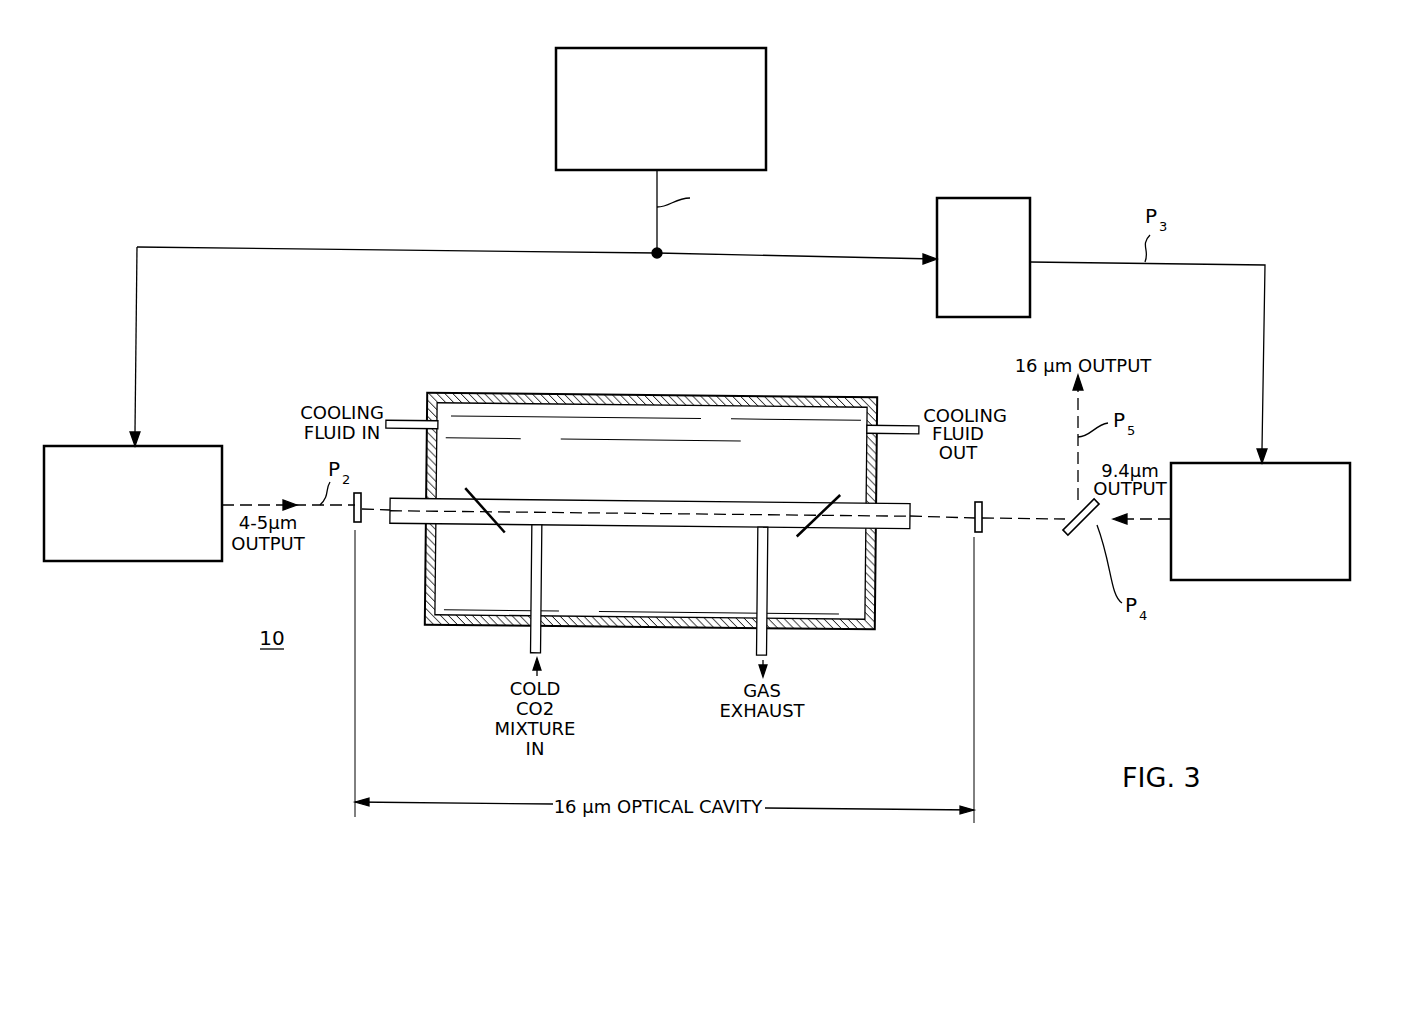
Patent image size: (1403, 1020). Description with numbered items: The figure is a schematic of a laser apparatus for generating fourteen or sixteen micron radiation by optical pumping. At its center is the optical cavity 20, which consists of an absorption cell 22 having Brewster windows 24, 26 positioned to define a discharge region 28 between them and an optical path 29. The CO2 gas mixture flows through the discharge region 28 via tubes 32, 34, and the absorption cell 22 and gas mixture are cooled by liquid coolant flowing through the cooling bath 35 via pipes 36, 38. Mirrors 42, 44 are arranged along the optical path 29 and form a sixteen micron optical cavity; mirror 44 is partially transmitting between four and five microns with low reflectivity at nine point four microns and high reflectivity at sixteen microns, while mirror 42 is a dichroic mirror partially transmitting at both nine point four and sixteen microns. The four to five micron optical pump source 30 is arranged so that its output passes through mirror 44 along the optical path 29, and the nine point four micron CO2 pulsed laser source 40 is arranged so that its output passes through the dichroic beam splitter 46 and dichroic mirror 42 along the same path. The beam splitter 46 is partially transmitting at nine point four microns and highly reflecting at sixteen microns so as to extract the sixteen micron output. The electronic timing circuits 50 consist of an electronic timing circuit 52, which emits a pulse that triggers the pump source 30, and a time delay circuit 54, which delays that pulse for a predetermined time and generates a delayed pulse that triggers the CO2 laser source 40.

The optical cavity 20 is at (651, 512).
The absorption cell 22 is at (687, 528).
The Brewster window 24 is at (486, 526).
The Brewster window 26 is at (822, 527).
The discharge region 28 is at (592, 520).
The optical path 29 is at (851, 520).
The optical pump source 30 is at (143, 563).
The tube 32 is at (543, 637).
The tube 34 is at (770, 645).
The cooling bath 35 is at (683, 430).
The pipe 36 is at (405, 420).
The pipe 38 is at (897, 423).
The CO2 pulsed laser source 40 is at (1272, 582).
The dichroic mirror 42 is at (985, 522).
The mirror 44 is at (362, 515).
The dichroic beam splitter 46 is at (1086, 540).
The electronic timing circuits 50 is at (643, 306).
The electronic timing circuit 52 is at (766, 105).
The time delay circuit 54 is at (1000, 198).